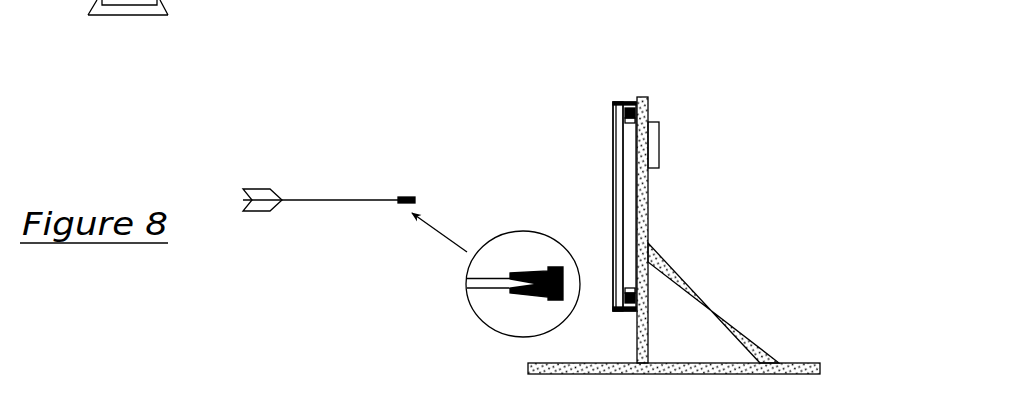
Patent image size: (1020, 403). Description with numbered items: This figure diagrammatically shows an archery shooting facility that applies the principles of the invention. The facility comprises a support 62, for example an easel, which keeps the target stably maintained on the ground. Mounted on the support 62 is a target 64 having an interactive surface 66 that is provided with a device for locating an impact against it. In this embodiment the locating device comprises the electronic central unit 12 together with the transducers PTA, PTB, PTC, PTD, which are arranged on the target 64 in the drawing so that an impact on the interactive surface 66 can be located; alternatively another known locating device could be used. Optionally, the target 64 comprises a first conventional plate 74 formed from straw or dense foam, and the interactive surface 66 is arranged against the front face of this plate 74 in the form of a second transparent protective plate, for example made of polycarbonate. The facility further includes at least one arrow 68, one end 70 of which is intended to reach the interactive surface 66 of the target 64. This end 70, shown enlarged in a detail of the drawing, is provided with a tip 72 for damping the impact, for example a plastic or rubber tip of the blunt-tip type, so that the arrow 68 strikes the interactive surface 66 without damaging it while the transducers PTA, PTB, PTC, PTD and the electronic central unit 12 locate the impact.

The electronic central unit 12 is at (659, 137).
The support 62 is at (813, 353).
The target 64 is at (678, 158).
The interactive surface 66 is at (614, 152).
The arrow 68 is at (333, 200).
The end of the arrow 70 is at (503, 252).
The tip 72 is at (547, 270).
The first conventional plate 74 is at (632, 216).
The transducer PTA is at (716, 98).
The transducer PTB is at (636, 114).
The transducer PTC is at (717, 279).
The transducer PTD is at (635, 298).